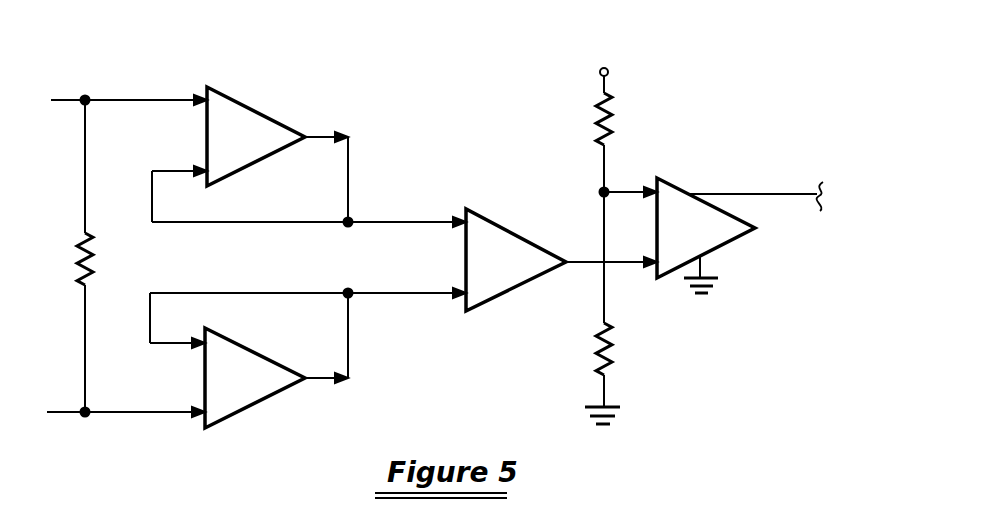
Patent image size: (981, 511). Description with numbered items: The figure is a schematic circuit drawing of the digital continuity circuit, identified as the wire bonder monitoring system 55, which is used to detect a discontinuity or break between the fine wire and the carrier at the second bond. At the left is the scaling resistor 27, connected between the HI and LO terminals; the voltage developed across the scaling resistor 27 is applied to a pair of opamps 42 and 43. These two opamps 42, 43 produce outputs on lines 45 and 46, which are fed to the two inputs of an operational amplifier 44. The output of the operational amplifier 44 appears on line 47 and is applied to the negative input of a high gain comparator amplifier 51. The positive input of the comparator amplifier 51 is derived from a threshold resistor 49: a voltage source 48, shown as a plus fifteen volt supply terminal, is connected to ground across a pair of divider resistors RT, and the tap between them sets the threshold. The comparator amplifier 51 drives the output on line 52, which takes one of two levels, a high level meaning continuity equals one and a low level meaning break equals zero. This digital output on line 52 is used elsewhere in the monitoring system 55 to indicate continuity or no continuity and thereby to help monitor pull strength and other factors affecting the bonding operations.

The scaling resistor 27 is at (70, 278).
The opamp 42 is at (250, 109).
The opamp 43 is at (247, 407).
The operational amplifier 44 is at (512, 233).
The line 45 is at (414, 222).
The line 46 is at (395, 294).
The line 47 is at (578, 264).
The voltage source 48 is at (628, 50).
The threshold resistor 49 is at (650, 117).
The high gain comparator amplifier 51 is at (700, 239).
The line 52 is at (768, 195).
The wire bonder monitoring system (WBMS) 55 is at (421, 87).